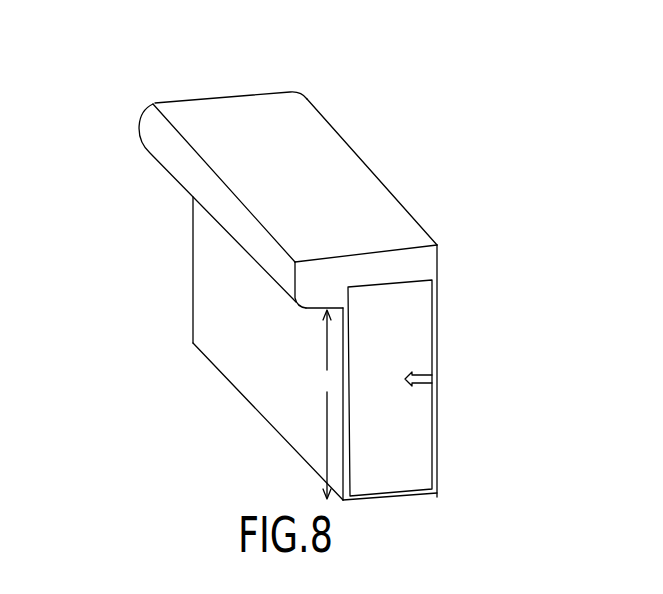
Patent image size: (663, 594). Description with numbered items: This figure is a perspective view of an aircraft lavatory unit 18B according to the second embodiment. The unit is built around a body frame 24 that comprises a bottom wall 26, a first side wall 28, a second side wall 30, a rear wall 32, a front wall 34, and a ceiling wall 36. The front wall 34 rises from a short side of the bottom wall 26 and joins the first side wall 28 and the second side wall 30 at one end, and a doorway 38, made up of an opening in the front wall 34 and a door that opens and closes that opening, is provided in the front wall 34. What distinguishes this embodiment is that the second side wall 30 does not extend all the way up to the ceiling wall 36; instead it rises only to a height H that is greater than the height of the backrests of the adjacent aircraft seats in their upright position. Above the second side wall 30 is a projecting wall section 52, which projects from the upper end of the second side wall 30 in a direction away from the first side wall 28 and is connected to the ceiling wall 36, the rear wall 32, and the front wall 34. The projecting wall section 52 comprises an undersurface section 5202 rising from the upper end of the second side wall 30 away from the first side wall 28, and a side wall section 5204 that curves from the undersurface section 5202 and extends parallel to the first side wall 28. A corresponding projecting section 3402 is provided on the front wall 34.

The aircraft lavatory unit 18B is at (355, 85).
The body frame 24 is at (240, 70).
The bottom wall 26 is at (268, 421).
The first side wall 28 is at (375, 168).
The second side wall 30 is at (237, 322).
The rear wall 32 is at (193, 302).
The front wall 34 is at (418, 262).
The ceiling wall 36 is at (317, 139).
The doorway 38 is at (427, 320).
The projecting wall section 52 is at (234, 228).
The undersurface section 5202 is at (184, 190).
The side wall section 5204 is at (180, 158).
The projecting section 3402 is at (318, 311).